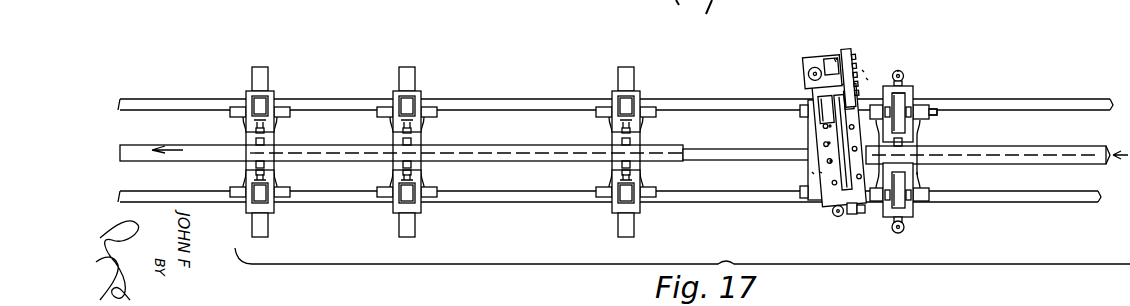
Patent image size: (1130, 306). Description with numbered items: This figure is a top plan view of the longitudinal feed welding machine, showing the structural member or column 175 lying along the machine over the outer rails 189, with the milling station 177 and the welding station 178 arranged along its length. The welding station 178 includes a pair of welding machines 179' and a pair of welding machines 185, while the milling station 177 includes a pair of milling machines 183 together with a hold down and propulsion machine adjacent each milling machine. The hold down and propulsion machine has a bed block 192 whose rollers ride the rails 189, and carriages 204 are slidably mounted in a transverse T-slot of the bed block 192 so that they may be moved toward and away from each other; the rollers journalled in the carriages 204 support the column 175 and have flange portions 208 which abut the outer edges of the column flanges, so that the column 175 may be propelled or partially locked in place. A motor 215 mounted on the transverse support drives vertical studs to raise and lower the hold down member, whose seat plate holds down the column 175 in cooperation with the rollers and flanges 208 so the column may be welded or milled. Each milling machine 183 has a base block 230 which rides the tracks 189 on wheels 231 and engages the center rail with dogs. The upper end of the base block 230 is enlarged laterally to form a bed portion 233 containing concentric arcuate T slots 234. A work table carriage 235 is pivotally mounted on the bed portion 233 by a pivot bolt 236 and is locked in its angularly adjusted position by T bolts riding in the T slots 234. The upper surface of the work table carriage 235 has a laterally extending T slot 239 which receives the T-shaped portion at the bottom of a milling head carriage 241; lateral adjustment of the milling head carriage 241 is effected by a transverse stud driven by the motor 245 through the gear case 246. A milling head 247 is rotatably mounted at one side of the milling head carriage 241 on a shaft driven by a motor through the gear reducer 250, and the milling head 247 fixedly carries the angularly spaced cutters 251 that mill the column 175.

The column 175 is at (483, 161).
The milling station 177 is at (1052, 214).
The welding station 178 is at (500, 216).
The welding machines 179' is at (546, 128).
The milling machines 183 is at (823, 48).
The welding machines 185 is at (238, 72).
The outer rails 189 is at (740, 85).
The bed block 192 is at (926, 118).
The carriages 204 is at (905, 103).
The flange portions 208 is at (921, 170).
The motor 215 is at (836, 58).
The base block 230 is at (829, 162).
The wheels 231 is at (808, 100).
The bed portion 233 is at (813, 173).
The arcuate T slots 234 is at (820, 172).
The work table carriage 235 is at (852, 215).
The pivot bolt 236 is at (828, 126).
The T slot 239 is at (828, 143).
The milling head carriage 241 is at (866, 78).
The motor 245 is at (836, 217).
The gear case 246 is at (860, 213).
The milling head 247 is at (862, 72).
The gear reducer 250 is at (838, 58).
The cutters 251 is at (904, 75).